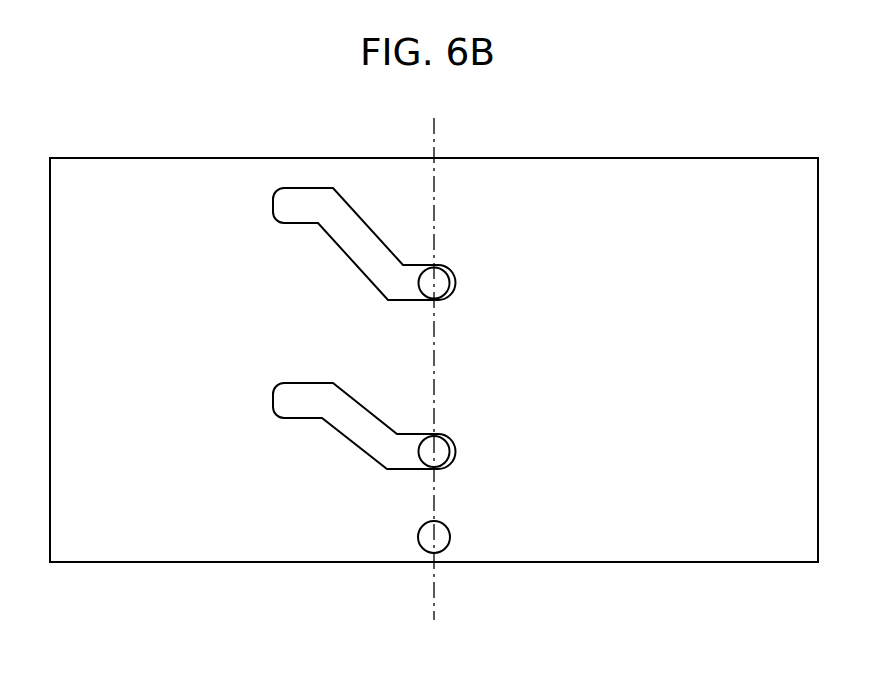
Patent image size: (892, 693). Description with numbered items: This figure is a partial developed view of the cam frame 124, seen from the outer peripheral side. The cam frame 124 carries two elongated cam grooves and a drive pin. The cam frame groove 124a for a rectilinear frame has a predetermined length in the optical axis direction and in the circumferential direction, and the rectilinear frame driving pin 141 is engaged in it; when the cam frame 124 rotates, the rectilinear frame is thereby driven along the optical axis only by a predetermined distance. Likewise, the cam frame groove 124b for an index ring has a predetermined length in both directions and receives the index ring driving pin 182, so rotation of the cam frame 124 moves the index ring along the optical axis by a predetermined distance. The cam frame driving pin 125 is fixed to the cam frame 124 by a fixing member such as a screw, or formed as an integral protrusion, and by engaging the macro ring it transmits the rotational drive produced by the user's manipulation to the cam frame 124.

The cam frame 124 is at (655, 190).
The cam frame groove for a rectilinear frame 124a is at (357, 445).
The cam frame groove for an index ring 124b is at (311, 187).
The index ring driving pin 182 is at (442, 278).
The rectilinear frame driving pin 141 is at (428, 453).
The cam frame driving pin 125 is at (427, 538).